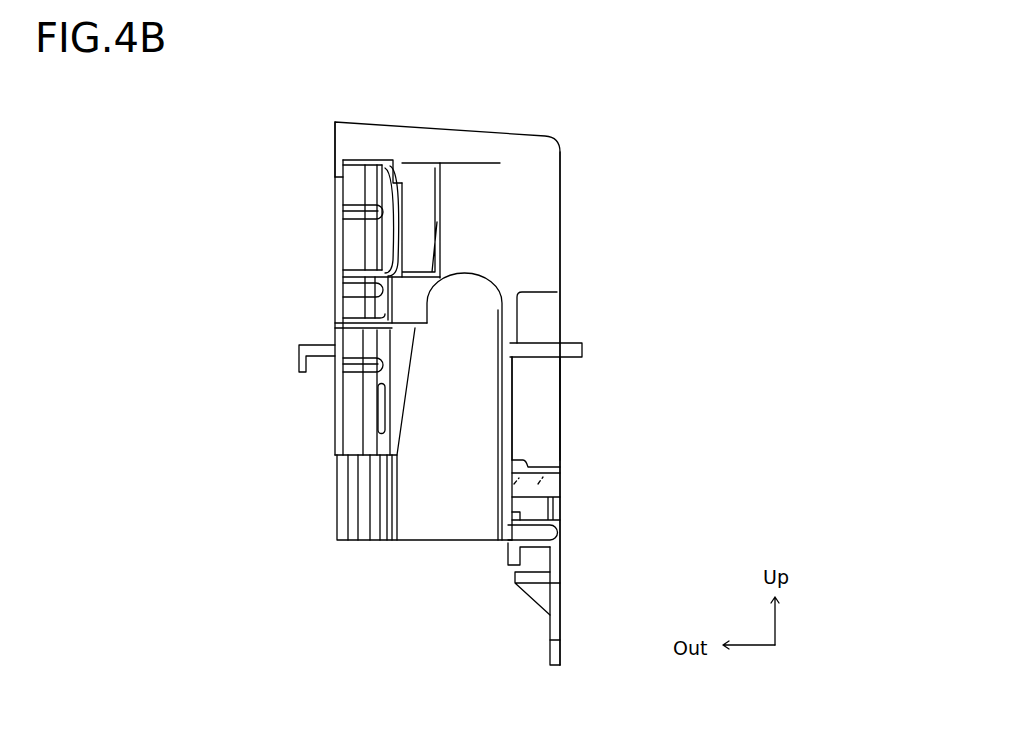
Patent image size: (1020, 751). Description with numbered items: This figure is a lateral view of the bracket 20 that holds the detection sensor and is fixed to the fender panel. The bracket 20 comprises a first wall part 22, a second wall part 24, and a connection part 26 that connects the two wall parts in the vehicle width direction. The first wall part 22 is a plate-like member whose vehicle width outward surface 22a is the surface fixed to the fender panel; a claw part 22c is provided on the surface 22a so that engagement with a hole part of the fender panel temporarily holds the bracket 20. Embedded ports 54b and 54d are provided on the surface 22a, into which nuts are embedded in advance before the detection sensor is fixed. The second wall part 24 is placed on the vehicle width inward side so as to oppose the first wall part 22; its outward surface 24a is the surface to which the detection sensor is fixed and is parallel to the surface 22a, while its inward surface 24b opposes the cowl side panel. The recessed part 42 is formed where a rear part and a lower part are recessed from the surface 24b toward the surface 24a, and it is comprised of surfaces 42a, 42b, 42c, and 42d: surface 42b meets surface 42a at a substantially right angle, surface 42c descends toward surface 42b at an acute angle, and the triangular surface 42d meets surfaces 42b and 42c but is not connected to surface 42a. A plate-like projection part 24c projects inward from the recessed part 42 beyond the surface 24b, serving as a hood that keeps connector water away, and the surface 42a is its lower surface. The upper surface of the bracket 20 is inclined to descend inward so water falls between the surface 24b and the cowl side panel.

The bracket 20 is at (513, 76).
The first wall part 22 is at (366, 118).
The surface 22a is at (335, 140).
The claw part 22c is at (303, 346).
The second wall part 24 is at (560, 371).
The surface 24a is at (500, 313).
The surface 24b is at (562, 192).
The projection part 24c is at (584, 350).
The connection part 26 is at (458, 172).
The recessed part 42 is at (615, 511).
The surface 42a is at (540, 357).
The surface 42b is at (533, 397).
The surface 42c is at (586, 468).
The surface 42d is at (525, 471).
The embedded port 54b is at (355, 222).
The embedded port 54d is at (352, 385).